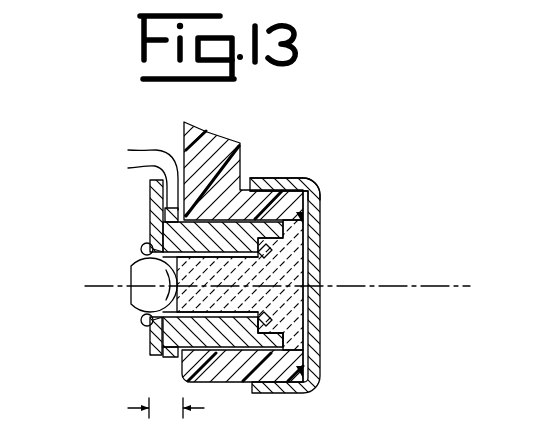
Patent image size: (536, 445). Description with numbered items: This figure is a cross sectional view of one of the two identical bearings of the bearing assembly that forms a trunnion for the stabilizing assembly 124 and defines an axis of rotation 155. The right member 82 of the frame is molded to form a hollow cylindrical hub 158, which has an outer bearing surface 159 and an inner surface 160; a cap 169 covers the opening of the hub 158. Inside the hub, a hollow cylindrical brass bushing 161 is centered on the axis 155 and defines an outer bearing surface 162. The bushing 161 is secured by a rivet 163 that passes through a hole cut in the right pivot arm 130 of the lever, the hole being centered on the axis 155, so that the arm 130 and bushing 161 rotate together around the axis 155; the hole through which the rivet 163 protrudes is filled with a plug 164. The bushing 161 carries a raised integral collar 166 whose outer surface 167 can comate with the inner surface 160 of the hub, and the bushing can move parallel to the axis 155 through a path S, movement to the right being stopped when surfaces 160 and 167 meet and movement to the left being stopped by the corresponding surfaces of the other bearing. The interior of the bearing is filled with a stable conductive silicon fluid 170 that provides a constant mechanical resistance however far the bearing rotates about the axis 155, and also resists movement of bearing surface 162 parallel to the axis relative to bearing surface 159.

The stabilizing assembly 124 is at (318, 146).
The right member 82 is at (183, 132).
The outer bearing surface 162 is at (130, 150).
The raised integral collar 166 is at (136, 168).
The right pivot arm 130 is at (150, 200).
The plug 164 is at (128, 273).
The rivet 163 is at (140, 322).
The outer surface 167 is at (178, 356).
The inner surface 160 is at (182, 364).
The hollow cylindrical hub 158 is at (247, 392).
The cap 169 is at (322, 218).
The outer bearing surface 159 is at (320, 237).
The conductive silicon fluid 170 is at (286, 279).
The axis of rotation 155 is at (455, 286).
The brass bushing 161 is at (290, 337).